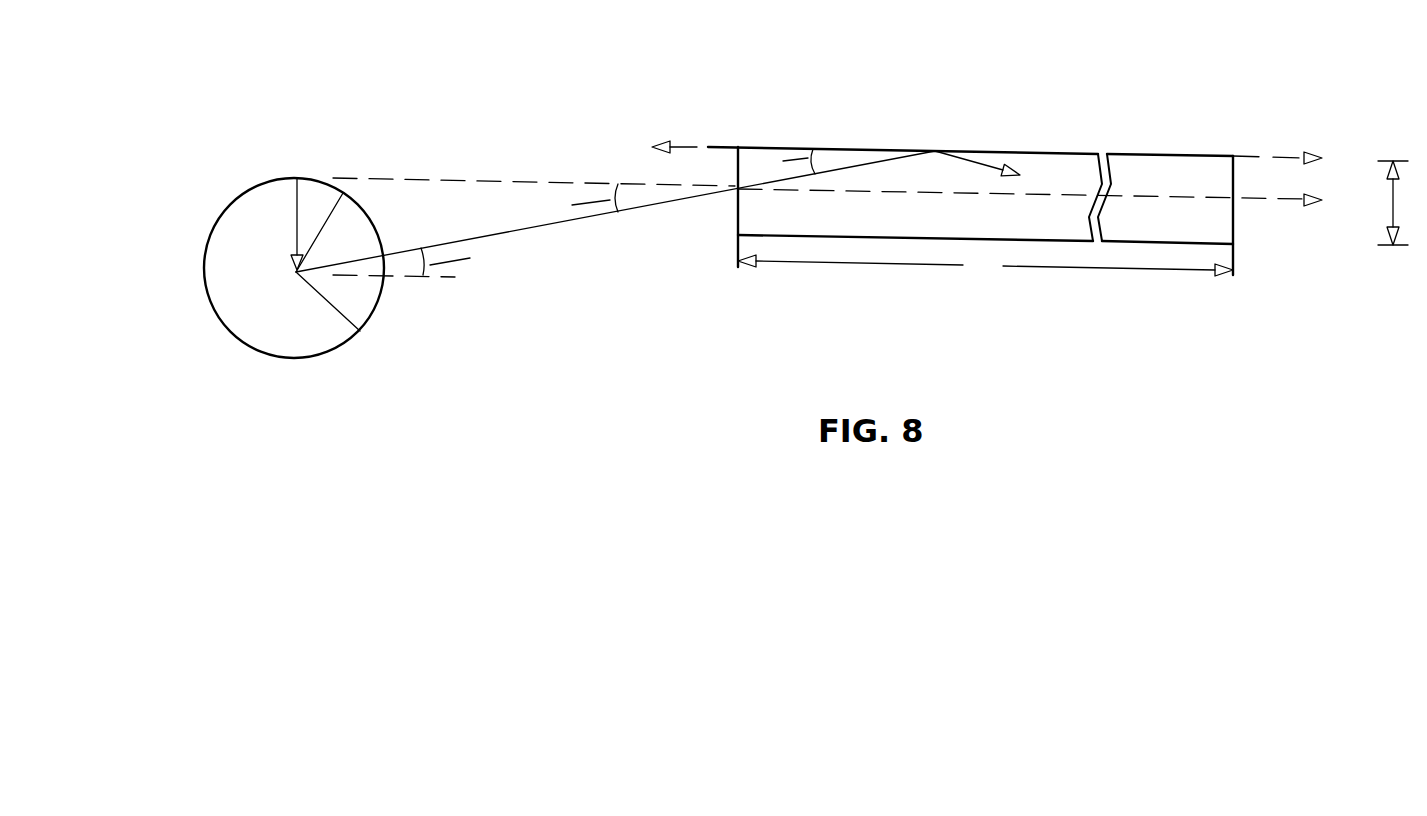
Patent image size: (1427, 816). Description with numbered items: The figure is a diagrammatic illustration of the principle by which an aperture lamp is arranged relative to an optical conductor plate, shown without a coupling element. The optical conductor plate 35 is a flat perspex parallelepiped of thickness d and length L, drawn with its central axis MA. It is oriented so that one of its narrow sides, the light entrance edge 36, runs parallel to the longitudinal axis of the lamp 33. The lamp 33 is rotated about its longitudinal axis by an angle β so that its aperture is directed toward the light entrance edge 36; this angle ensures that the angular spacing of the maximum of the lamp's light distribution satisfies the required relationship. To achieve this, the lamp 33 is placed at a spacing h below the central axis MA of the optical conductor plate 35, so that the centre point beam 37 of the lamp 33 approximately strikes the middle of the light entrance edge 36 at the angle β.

The lamp 33 is at (172, 258).
The optical conductor plate 35 is at (1110, 103).
The light entrance edge 36 is at (738, 164).
The centre point beam 37 is at (583, 218).